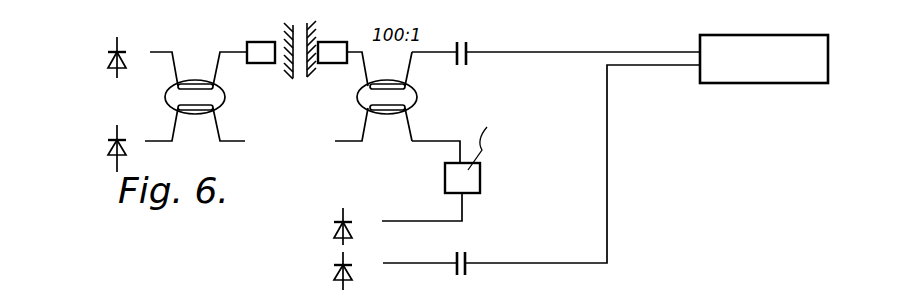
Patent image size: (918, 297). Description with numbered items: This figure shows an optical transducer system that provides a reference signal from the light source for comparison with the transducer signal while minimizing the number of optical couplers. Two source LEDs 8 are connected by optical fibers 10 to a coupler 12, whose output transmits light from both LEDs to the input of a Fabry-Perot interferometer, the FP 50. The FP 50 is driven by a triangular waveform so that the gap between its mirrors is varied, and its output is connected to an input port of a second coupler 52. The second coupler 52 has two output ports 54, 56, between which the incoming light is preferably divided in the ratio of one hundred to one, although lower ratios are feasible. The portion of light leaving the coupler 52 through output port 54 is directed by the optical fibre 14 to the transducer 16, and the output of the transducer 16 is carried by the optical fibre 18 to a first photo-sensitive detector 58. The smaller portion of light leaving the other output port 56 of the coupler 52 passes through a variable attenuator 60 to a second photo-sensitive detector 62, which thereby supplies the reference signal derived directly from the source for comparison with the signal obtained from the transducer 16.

The source LEDs 8 is at (110, 66).
The optical fibers 10 is at (161, 53).
The coupler 12 is at (193, 79).
The optical fibre 14 is at (597, 51).
The transducer 16 is at (757, 35).
The optical fibre 18 is at (609, 172).
The FP 50 is at (300, 82).
The second coupler 52 is at (387, 135).
The output port 54 is at (438, 52).
The output port 56 is at (425, 143).
The first photo-sensitive detector 58 is at (336, 275).
The variable attenuator 60 is at (480, 178).
The second photo-sensitive detector 62 is at (338, 229).